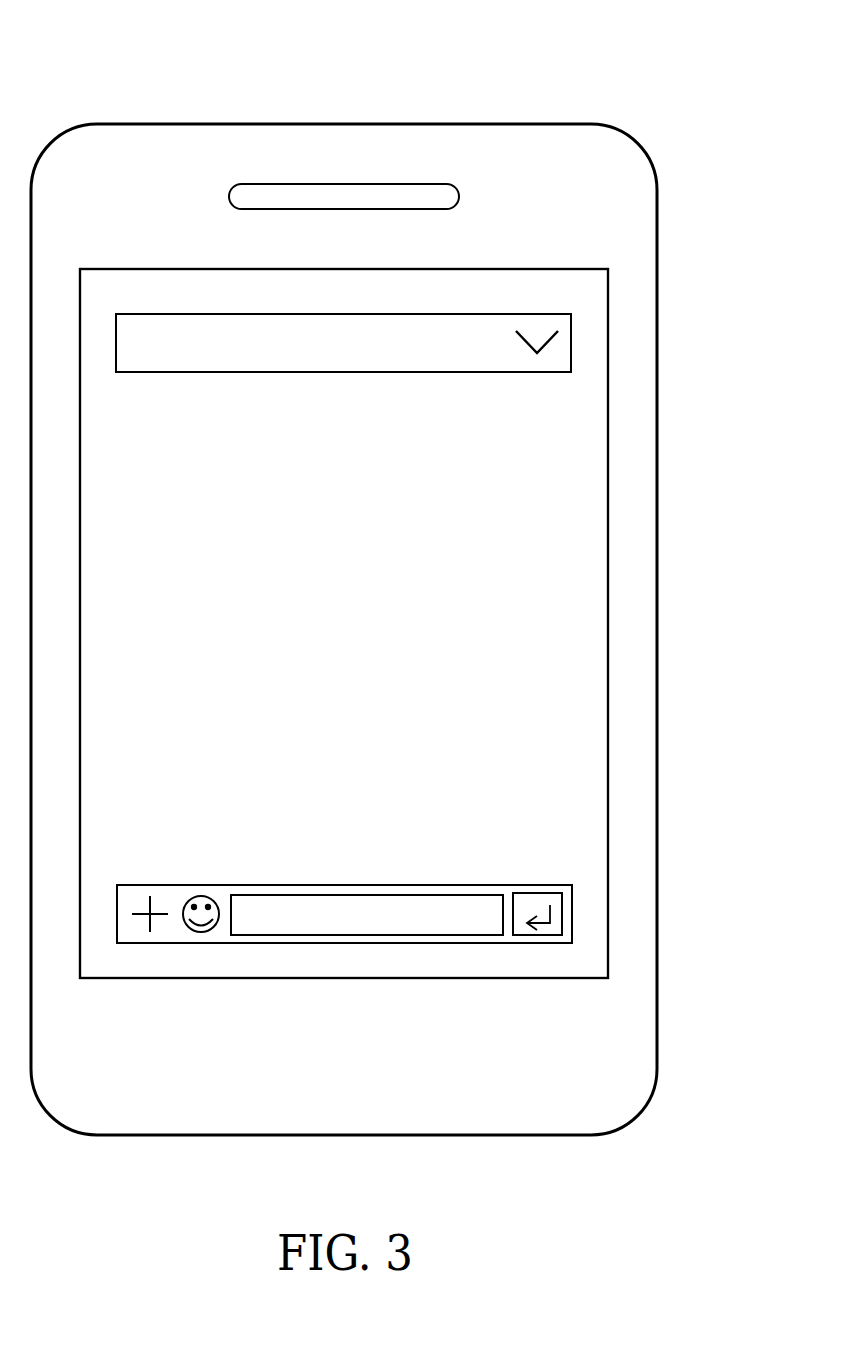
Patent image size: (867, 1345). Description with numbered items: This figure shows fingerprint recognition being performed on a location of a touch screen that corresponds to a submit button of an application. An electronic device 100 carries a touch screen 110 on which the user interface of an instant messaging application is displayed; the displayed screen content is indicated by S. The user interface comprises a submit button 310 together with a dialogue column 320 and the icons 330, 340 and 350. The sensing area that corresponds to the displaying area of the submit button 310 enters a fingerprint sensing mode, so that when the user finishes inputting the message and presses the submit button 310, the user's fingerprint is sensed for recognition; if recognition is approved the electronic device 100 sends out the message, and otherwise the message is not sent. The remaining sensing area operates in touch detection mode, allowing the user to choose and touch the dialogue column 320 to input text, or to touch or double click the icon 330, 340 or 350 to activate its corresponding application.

The electronic device 100 is at (632, 88).
The touch screen 110 is at (608, 432).
The screen S is at (577, 487).
The icon 350 is at (571, 341).
The submit button 310 is at (428, 857).
The dialogue column 320 is at (365, 893).
The icon 330 is at (198, 895).
The icon 340 is at (148, 885).